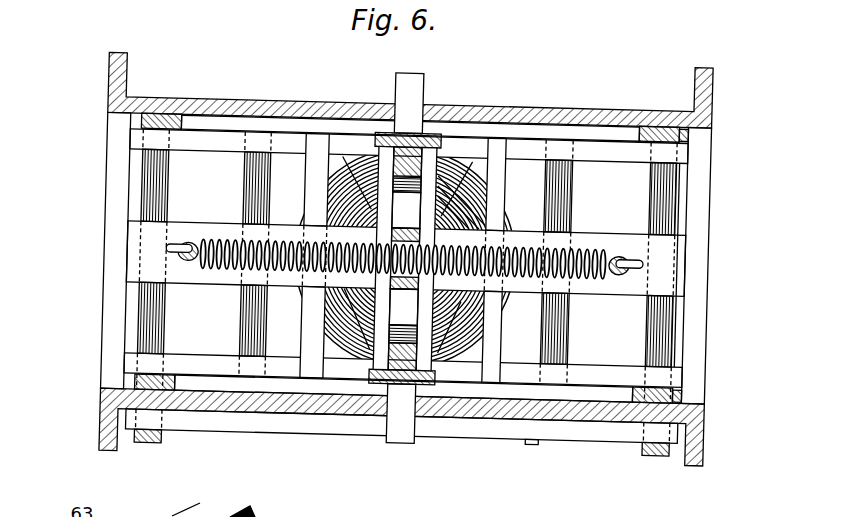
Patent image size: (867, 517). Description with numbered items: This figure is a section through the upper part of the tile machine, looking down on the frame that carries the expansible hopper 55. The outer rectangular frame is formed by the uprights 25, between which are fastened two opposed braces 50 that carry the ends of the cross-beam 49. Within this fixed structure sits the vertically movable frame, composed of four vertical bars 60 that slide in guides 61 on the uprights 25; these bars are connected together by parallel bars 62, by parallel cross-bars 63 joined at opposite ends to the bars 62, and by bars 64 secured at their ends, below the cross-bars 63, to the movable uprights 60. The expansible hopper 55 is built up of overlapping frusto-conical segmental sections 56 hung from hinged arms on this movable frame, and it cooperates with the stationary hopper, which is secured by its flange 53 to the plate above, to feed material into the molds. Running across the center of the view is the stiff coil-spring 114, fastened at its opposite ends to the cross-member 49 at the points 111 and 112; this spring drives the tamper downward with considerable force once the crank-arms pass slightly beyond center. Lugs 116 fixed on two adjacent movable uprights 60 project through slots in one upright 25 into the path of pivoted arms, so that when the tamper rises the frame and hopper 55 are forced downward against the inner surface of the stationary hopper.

The uprights 25 is at (128, 104).
The cross-beam 49 is at (597, 238).
The braces 50 is at (106, 251).
The flange 53 is at (461, 202).
The expansible hopper 55 is at (452, 157).
The segmental sections 56 is at (364, 163).
The vertical bars 60 is at (158, 121).
The guides 61 is at (186, 113).
The parallel bars 62 is at (287, 146).
The cross-bars 63 is at (309, 167).
The bars 64 is at (149, 319).
The spring fastening 111 is at (180, 263).
The spring fastening 112 is at (628, 266).
The coil-spring 114 is at (293, 273).
The lugs 116 is at (150, 449).